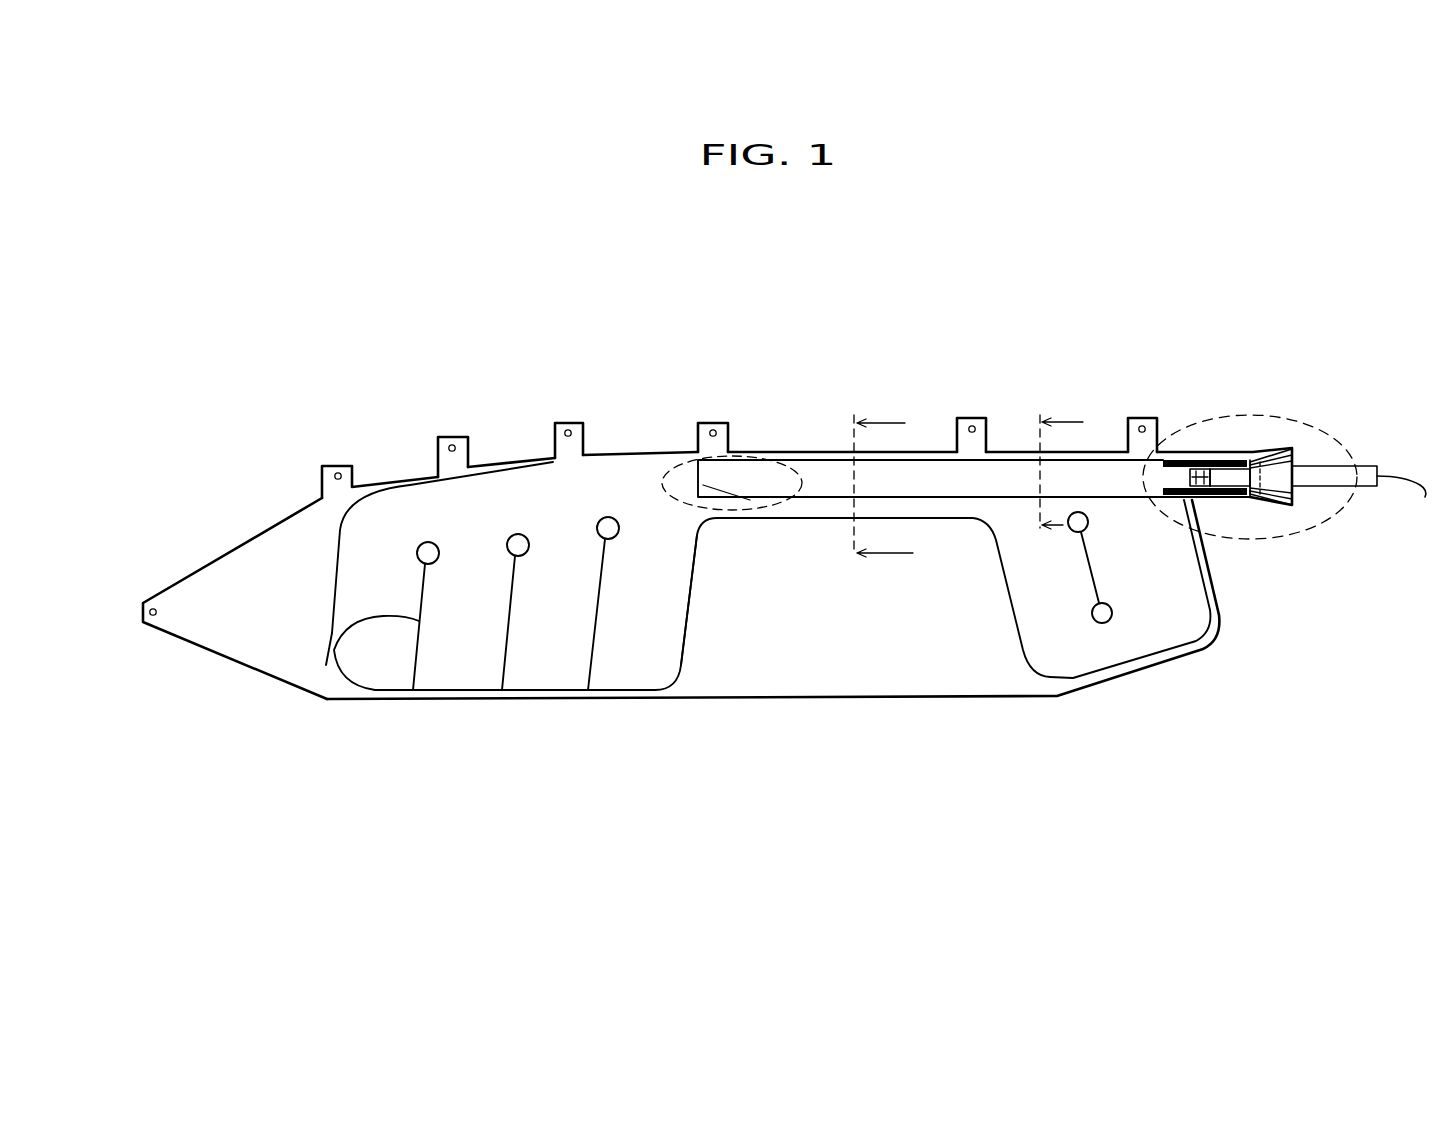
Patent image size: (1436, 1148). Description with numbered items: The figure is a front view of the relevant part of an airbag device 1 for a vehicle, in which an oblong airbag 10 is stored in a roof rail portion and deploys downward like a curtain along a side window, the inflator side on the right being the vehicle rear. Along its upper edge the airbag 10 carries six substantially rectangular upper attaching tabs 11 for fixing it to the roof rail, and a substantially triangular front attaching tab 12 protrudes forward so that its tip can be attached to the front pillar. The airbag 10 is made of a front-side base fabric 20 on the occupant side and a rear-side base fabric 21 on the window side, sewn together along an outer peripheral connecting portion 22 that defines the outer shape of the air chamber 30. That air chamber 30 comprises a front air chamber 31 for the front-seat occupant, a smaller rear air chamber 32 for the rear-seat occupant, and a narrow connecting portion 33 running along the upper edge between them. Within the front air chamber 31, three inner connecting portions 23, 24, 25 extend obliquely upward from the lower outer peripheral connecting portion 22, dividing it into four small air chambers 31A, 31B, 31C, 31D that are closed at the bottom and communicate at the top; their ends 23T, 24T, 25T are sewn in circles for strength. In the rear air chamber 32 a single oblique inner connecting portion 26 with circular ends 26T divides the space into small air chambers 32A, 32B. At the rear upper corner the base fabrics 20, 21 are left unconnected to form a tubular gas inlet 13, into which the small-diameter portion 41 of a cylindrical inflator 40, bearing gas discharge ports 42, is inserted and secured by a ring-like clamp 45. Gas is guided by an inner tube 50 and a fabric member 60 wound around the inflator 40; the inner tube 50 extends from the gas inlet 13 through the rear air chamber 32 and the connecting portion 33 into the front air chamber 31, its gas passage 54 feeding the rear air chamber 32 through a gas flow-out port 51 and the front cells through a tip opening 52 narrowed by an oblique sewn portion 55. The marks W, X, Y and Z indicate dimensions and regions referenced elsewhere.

The airbag device 1 is at (263, 430).
The airbag 10 is at (842, 697).
The upper attaching tab 11 is at (338, 465).
The front attaching tab 12 is at (190, 590).
The gas inlet 13 is at (1223, 497).
The front-side base fabric 20 is at (792, 629).
The rear-side base fabric 21 is at (943, 680).
The outer peripheral connecting portion 22 is at (687, 623).
The inner connecting portion 23 is at (326, 665).
The end of inner connecting portion 23T is at (428, 542).
The inner connecting portion 24 is at (523, 690).
The end of inner connecting portion 24T is at (518, 534).
The inner connecting portion 25 is at (620, 690).
The end of inner connecting portion 25T is at (608, 517).
The inner connecting portion 26 is at (1093, 563).
The end of inner connecting portion 26T is at (1089, 523).
The air chamber 30 is at (330, 552).
The front air chamber 31 is at (493, 490).
The small air chamber 31A is at (387, 670).
The small air chamber 31B is at (453, 693).
The small air chamber 31C is at (563, 693).
The small air chamber 31D is at (655, 662).
The rear air chamber 32 is at (1130, 653).
The small air chamber 32A is at (1060, 617).
The small air chamber 32B is at (1110, 618).
The connecting portion 33 is at (817, 518).
The inflator 40 is at (1330, 466).
The small-diameter portion 41 is at (1197, 469).
The gas discharge port 42 is at (1252, 468).
The clamp 45 is at (1258, 452).
The inner tube 50 is at (1012, 480).
The gas flow-out port 51 is at (1033, 497).
The opening 52 is at (668, 472).
The gas passage 54 is at (927, 480).
The sewn portion 55 is at (727, 492).
The fabric member 60 is at (1175, 462).
The width dimension W is at (885, 473).
The dimension X is at (1062, 458).
The region Y is at (815, 453).
The region Z is at (1345, 505).